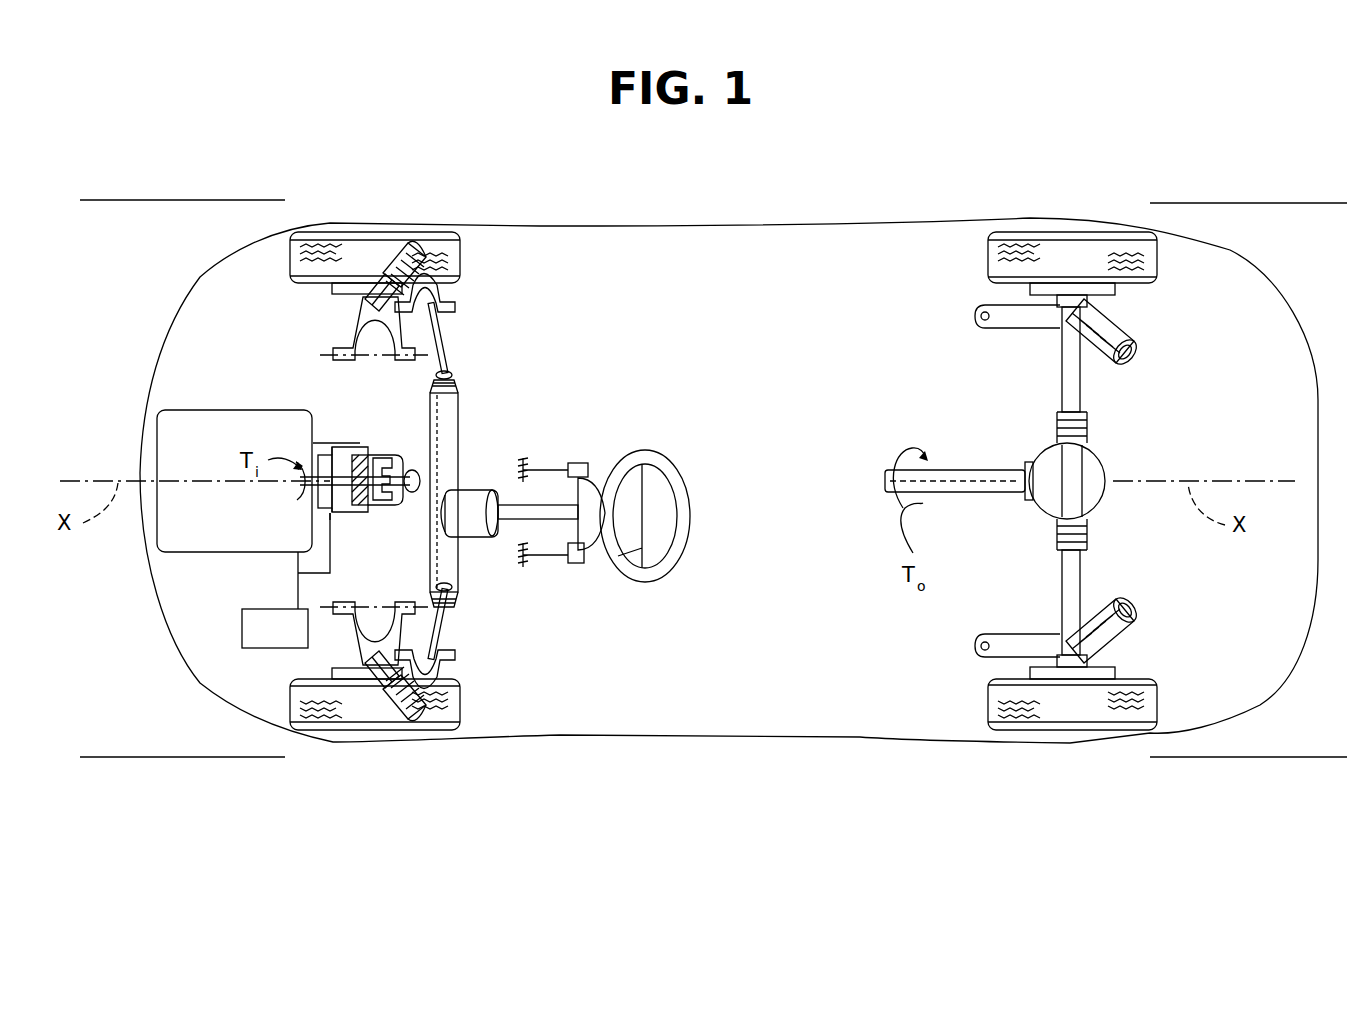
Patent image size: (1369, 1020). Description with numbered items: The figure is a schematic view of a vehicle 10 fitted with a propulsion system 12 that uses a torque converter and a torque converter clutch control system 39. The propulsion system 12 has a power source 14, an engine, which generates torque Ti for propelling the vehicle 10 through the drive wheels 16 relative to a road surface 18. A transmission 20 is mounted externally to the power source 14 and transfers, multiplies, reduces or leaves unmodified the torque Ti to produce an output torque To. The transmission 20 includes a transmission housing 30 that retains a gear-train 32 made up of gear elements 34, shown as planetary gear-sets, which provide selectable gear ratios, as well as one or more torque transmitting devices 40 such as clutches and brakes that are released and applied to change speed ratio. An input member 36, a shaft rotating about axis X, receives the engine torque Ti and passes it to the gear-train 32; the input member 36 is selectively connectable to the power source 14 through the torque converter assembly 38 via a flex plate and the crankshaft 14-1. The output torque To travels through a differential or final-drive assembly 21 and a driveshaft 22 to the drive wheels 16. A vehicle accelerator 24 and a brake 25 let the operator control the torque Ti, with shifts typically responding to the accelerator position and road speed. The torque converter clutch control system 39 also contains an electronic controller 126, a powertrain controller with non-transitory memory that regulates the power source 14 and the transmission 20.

The vehicle 10 is at (1072, 140).
The propulsion system 12 is at (193, 560).
The power source 14 is at (203, 420).
The crankshaft 14-1 is at (313, 500).
The drive wheels 16 is at (1067, 237).
The road surface 18 is at (1321, 733).
The transmission 20 is at (348, 445).
The differential or final-drive assembly 21 is at (1105, 453).
The driveshaft 22 is at (410, 500).
The vehicle accelerator 24 is at (578, 463).
The brake 25 is at (576, 563).
The transmission housing 30 is at (352, 508).
The gear-train 32 is at (376, 515).
The gear elements 34 is at (383, 450).
The input member 36 is at (337, 512).
The torque converter assembly 38 is at (320, 447).
The torque converter clutch control system 39 is at (331, 582).
The torque transmitting devices 40 is at (433, 437).
The electronic controller 126 is at (296, 648).